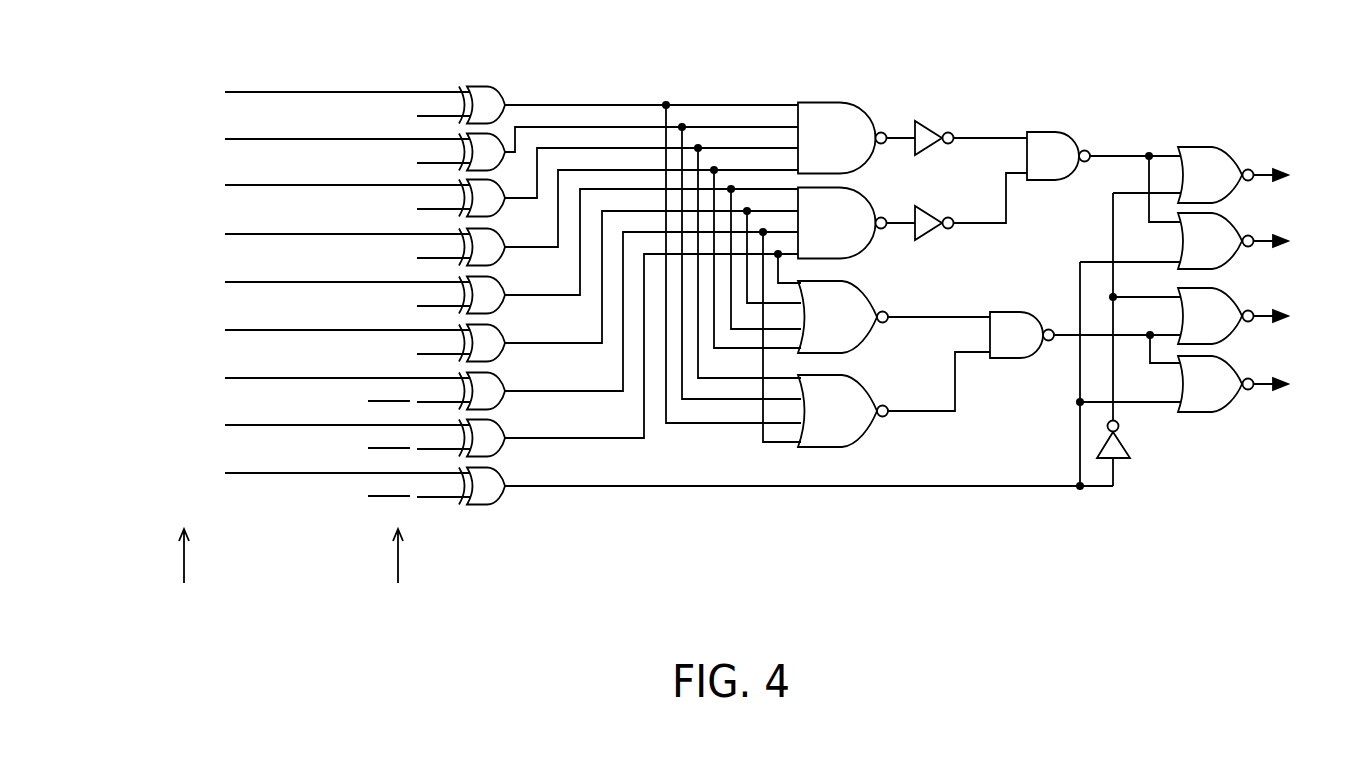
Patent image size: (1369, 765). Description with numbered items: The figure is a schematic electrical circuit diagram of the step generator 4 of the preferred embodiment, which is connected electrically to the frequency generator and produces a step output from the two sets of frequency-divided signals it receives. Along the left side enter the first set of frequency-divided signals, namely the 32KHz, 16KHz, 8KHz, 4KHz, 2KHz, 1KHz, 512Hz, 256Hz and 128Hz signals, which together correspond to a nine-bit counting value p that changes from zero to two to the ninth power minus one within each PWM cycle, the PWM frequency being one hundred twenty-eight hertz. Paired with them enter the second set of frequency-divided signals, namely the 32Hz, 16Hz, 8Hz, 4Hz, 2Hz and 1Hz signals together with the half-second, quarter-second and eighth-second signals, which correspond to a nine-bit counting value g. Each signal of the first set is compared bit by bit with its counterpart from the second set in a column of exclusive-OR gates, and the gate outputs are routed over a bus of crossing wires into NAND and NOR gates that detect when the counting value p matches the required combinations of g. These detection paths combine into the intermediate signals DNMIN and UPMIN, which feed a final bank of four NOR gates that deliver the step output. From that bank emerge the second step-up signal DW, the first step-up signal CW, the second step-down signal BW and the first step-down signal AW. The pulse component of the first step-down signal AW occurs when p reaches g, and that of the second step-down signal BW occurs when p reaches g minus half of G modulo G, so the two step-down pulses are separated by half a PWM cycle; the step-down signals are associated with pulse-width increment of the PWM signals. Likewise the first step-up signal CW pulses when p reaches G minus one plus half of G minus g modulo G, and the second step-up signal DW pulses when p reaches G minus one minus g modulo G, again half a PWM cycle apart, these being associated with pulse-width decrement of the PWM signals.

The step generator 4 is at (708, 367).
The 32 KHz frequency-divided signal 32KHz is at (310, 94).
The 16 KHz frequency-divided signal 16KHz is at (310, 141).
The 8 KHz frequency-divided signal 8KHz is at (317, 187).
The 4 KHz frequency-divided signal 4KHz is at (317, 236).
The 2 KHz frequency-divided signal 2KHz is at (317, 284).
The 1 KHz frequency-divided signal 1KHz is at (317, 332).
The 512 Hz frequency-divided signal 512Hz is at (310, 380).
The 256 Hz frequency-divided signal 256Hz is at (310, 427).
The 128 Hz frequency-divided signal 128Hz is at (310, 475).
The 32 Hz frequency-divided signal 32Hz is at (411, 117).
The 16 Hz frequency-divided signal 16Hz is at (411, 164).
The 8 Hz frequency-divided signal 8Hz is at (418, 210).
The 4 Hz frequency-divided signal 4Hz is at (418, 259).
The 2 Hz frequency-divided signal 2Hz is at (418, 307).
The 1 Hz frequency-divided signal 1Hz is at (418, 355).
The DNMIN signal DNMIN is at (1104, 153).
The UPMIN signal UPMIN is at (1085, 322).
The second step-up signal DW is at (1251, 175).
The first step-up signal CW is at (1251, 241).
The second step-down signal BW is at (1251, 316).
The first step-down signal AW is at (1251, 384).